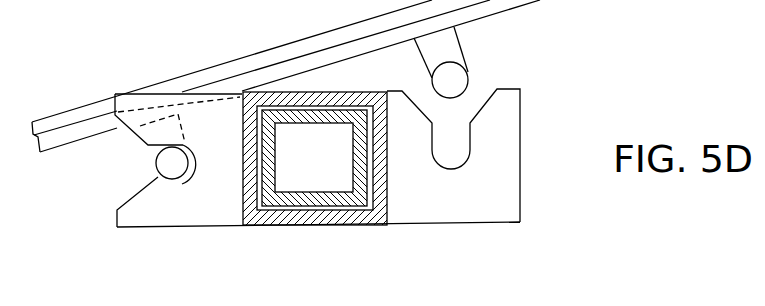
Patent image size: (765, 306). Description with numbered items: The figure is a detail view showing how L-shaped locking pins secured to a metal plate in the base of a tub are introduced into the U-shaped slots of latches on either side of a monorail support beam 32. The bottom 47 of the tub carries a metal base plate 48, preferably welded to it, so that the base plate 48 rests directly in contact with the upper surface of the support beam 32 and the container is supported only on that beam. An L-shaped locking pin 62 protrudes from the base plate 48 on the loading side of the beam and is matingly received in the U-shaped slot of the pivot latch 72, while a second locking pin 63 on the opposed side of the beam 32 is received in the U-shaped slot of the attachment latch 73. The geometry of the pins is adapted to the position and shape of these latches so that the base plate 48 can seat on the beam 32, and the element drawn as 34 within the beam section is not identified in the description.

The bottom of the tub 47 is at (250, 56).
The metal base plate 48 is at (558, 0).
The locking pin 62 is at (150, 150).
The locking pin 63 is at (457, 42).
The pivot latch 72 is at (107, 223).
The attachment latch 73 is at (515, 160).
The support beam 32 is at (375, 221).
The conductor 34 is at (297, 123).